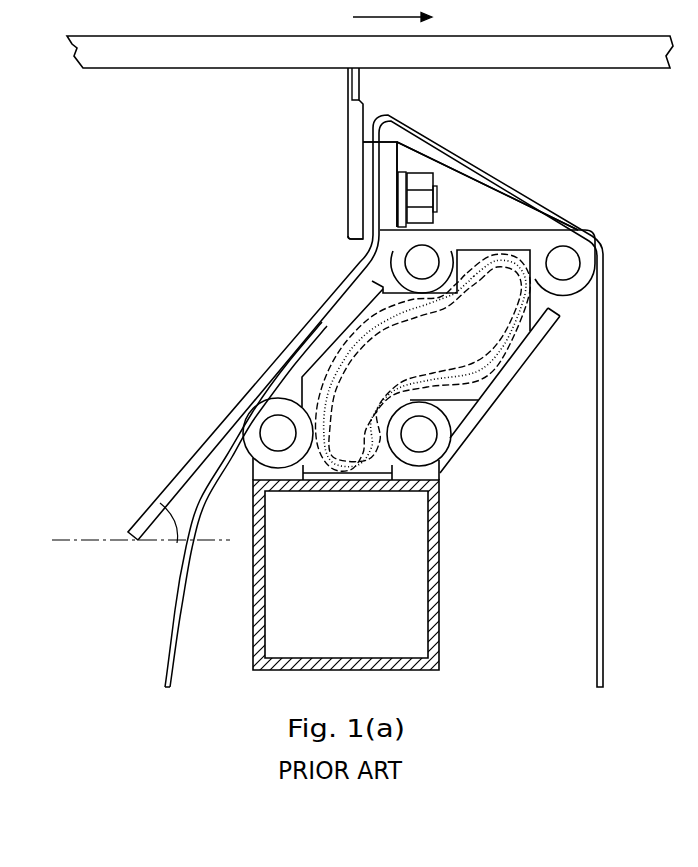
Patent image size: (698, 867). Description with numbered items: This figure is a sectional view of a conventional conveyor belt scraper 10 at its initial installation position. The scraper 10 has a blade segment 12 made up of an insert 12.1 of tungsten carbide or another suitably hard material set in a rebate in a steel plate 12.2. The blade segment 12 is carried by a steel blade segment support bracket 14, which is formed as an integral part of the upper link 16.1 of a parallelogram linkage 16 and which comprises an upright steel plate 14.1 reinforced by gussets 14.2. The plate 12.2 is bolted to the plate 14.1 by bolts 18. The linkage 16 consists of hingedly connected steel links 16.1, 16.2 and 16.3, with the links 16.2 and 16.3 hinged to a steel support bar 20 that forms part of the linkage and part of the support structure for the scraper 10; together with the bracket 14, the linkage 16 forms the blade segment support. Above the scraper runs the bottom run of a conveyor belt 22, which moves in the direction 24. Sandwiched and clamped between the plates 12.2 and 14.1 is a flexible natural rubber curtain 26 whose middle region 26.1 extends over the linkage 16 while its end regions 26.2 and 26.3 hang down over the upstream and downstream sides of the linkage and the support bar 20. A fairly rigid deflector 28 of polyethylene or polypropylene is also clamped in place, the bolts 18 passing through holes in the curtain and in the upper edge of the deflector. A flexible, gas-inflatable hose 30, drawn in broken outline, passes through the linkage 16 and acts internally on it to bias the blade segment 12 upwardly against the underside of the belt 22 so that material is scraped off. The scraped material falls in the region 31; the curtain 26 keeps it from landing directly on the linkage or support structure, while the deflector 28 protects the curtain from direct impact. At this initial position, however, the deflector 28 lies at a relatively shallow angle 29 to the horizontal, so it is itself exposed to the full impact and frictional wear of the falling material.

The scraper 10 is at (240, 335).
The blade segment 12 is at (345, 178).
The insert 12.1 is at (348, 85).
The steel plate 12.2 is at (348, 218).
The blade segment support bracket 14 is at (493, 210).
The upright steel plate 14.1 is at (405, 155).
The gussets 14.2 is at (527, 218).
The parallelogram linkage 16 is at (528, 366).
The upper link 16.1 is at (500, 243).
The link 16.2 is at (497, 353).
The link 16.3 is at (338, 328).
The bolts 18 is at (437, 199).
The steel support bar 20 is at (440, 603).
The conveyor belt 22 is at (600, 42).
The direction 24 is at (413, 23).
The flexible curtain 26 is at (188, 592).
The middle region 26.1 is at (478, 162).
The end region 26.2 is at (168, 652).
The end region 26.3 is at (604, 618).
The deflector 28 is at (198, 457).
The angle 29 is at (162, 532).
The gas-inflatable hose 30 is at (495, 387).
The region 31 is at (305, 292).